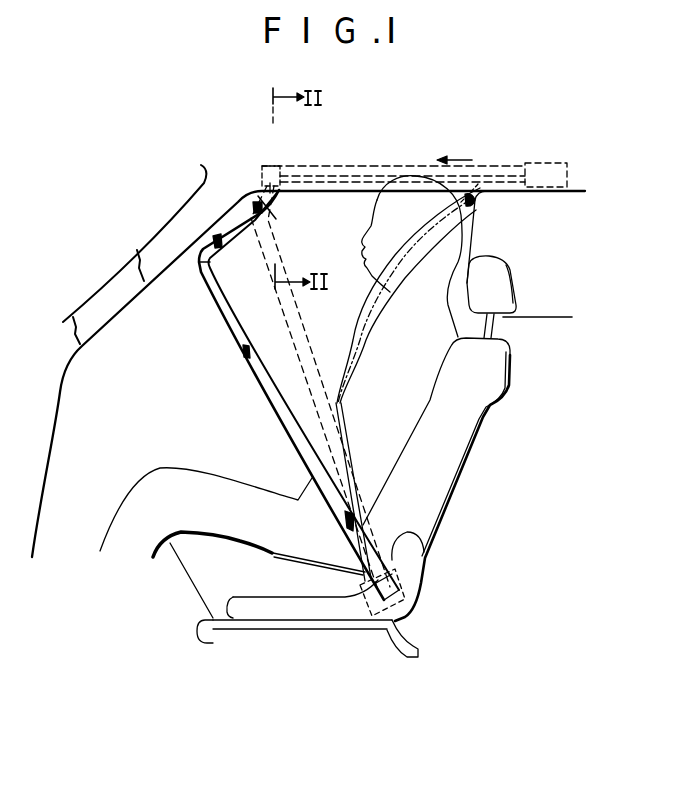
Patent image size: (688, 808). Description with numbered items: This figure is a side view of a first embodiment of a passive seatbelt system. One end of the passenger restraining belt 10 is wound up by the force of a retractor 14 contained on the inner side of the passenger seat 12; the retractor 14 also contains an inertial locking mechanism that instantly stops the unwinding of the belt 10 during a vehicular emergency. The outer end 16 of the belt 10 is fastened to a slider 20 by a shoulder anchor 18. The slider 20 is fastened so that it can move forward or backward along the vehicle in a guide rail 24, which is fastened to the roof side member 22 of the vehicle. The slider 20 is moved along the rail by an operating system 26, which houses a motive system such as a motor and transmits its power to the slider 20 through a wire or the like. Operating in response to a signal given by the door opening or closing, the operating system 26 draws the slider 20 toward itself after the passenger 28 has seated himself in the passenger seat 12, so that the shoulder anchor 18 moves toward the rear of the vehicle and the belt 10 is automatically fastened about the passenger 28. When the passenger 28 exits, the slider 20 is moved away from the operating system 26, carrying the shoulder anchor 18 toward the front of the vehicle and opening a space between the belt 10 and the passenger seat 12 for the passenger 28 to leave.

The passenger restraining belt 10 is at (236, 338).
The passenger seat 12 is at (447, 455).
The retractor 14 is at (362, 612).
The outer end 16 is at (236, 238).
The shoulder anchor 18 is at (276, 210).
The slider 20 is at (265, 167).
The roof side member 22 is at (458, 160).
The guide rail 24 is at (362, 165).
The operating system 26 is at (542, 162).
The passenger 28 is at (222, 493).